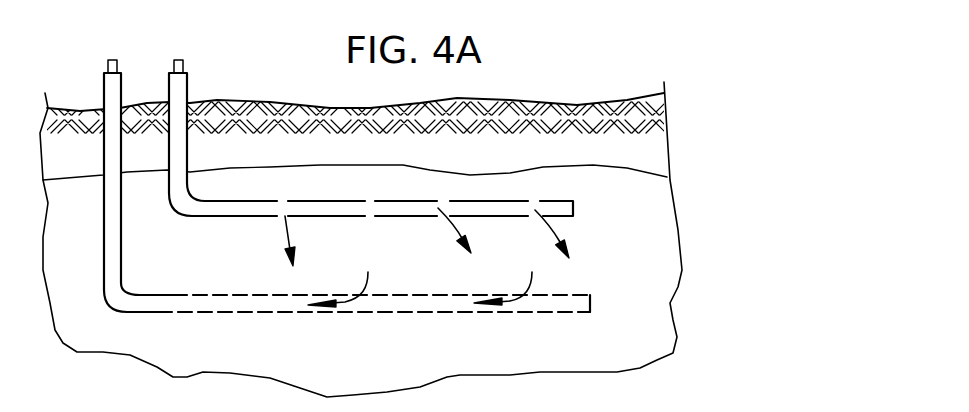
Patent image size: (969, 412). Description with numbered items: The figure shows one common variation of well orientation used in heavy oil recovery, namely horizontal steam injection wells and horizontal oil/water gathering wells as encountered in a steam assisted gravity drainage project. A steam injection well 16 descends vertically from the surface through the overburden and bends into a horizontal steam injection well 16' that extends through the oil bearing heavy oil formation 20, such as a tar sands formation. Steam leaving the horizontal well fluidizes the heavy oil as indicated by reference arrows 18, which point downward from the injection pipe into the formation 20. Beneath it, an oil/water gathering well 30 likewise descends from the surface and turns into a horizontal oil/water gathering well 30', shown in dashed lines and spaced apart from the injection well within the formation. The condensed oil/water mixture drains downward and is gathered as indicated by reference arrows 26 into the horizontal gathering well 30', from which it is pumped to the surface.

The steam injection well 16 is at (223, 138).
The horizontal steam injection well 16' is at (430, 177).
The reference arrows 18 is at (287, 228).
The heavy oil formation 20 is at (376, 251).
The reference arrows 26 is at (360, 292).
The oil/water gathering well 30 is at (117, 186).
The horizontal oil/water gathering well 30' is at (374, 287).